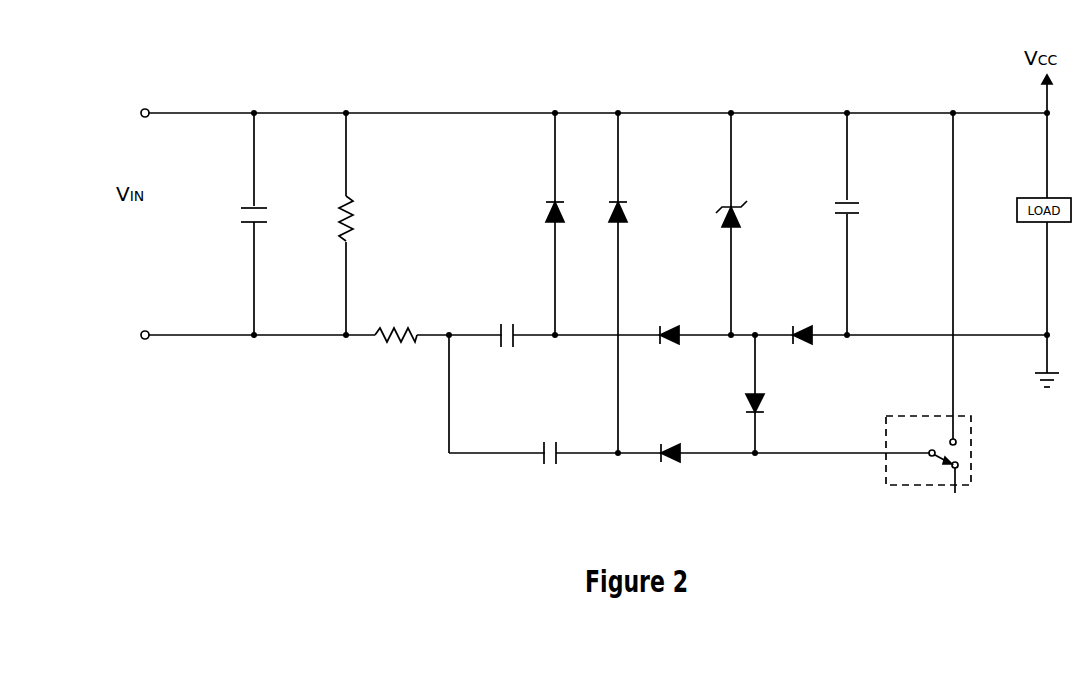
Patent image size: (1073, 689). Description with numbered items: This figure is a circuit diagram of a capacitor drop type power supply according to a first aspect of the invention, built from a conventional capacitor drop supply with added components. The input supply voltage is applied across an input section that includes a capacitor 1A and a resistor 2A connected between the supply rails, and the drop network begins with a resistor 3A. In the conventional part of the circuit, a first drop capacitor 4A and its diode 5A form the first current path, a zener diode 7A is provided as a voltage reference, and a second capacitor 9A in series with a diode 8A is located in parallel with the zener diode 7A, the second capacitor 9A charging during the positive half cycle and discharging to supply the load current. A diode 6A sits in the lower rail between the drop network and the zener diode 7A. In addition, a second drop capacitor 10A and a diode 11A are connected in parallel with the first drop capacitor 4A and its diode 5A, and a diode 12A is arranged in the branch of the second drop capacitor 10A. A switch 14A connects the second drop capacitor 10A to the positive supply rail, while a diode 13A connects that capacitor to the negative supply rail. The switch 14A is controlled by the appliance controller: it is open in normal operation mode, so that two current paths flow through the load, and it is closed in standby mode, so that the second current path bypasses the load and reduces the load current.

The input capacitor 1A is at (235, 205).
The input resistor 2A is at (327, 218).
The resistor 3A is at (396, 323).
The first drop capacitor 4A is at (497, 325).
The diode 5A is at (532, 202).
The diode 6A is at (664, 323).
The zener diode 7A is at (715, 211).
The diode 8A is at (796, 322).
The second capacitor 9A is at (862, 205).
The second drop capacitor 10A is at (538, 442).
The diode 11A is at (601, 203).
The diode 12A is at (656, 441).
The diode 13A is at (734, 403).
The switch 14A is at (950, 454).